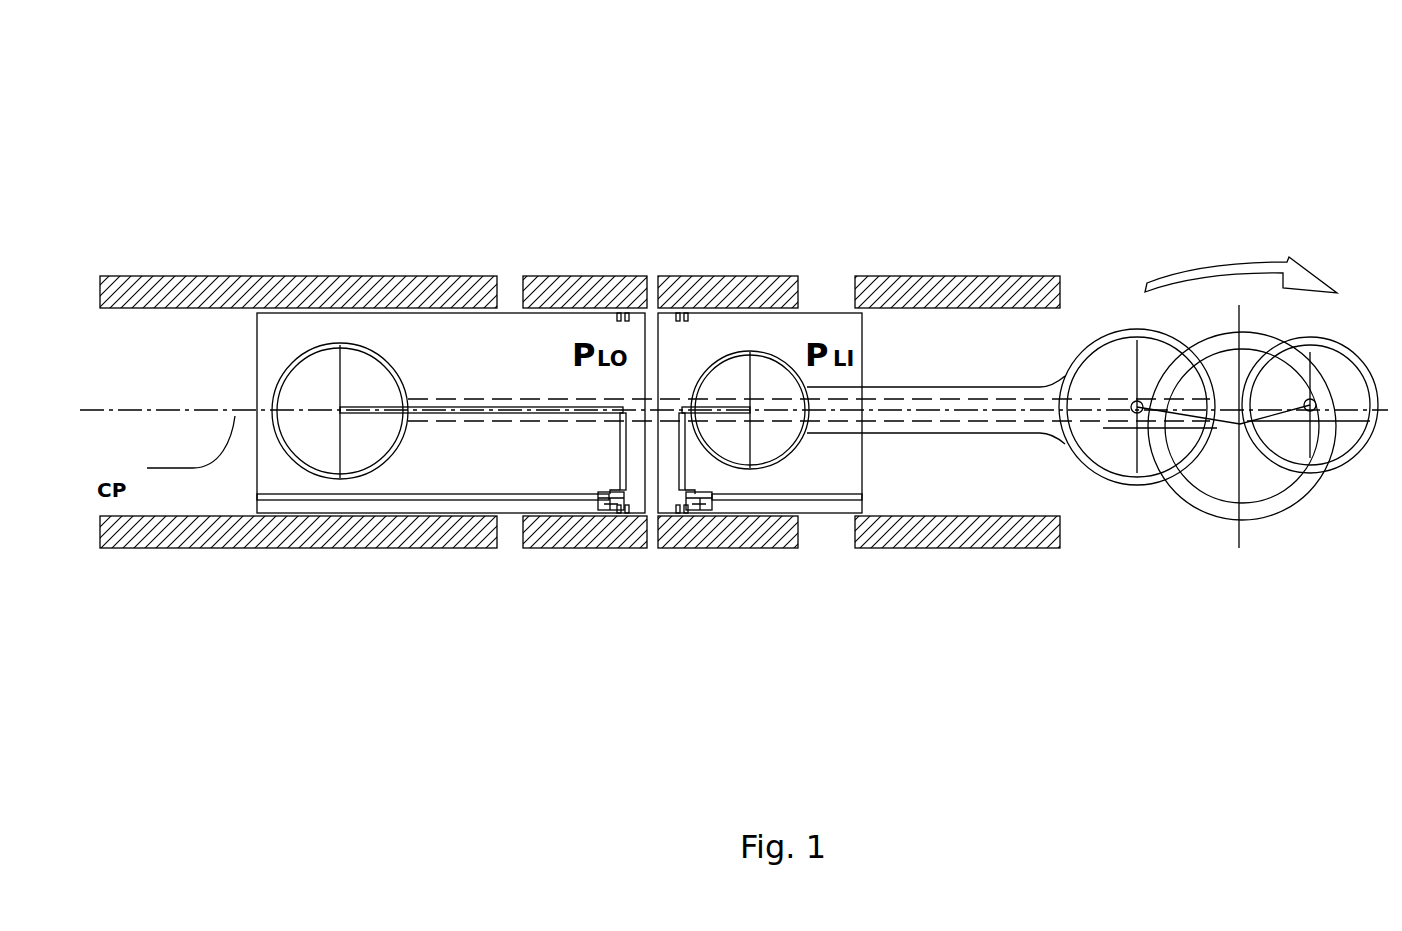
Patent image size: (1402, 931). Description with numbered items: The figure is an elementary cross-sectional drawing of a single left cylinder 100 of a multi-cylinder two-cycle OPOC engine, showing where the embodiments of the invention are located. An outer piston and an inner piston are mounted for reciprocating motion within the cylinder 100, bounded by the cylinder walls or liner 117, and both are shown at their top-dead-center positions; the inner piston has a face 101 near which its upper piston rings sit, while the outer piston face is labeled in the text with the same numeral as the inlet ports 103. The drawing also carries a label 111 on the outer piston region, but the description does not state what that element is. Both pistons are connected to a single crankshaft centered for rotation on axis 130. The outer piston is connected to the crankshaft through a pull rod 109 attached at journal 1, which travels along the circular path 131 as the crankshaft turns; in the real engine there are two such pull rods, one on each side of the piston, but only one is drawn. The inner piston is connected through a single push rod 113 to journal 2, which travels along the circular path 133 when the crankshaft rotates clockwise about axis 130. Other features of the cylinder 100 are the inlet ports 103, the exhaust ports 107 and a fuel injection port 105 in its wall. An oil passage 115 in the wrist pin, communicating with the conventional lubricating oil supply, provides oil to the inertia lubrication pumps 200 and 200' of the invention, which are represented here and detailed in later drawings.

The left cylinder 100 is at (1152, 186).
The inner piston face 101 is at (647, 548).
The inlet ports 103 is at (512, 277).
The fuel injection port 105 is at (651, 277).
The exhaust ports 107 is at (826, 277).
The pull rod 109 is at (418, 424).
The outer piston 111 is at (341, 410).
The push rod 113 is at (874, 387).
The oil passage 115 is at (752, 409).
The cylinder walls or liner 117 is at (922, 510).
The crankshaft axis 130 is at (1240, 424).
The circular path of journal 1 131 is at (1224, 520).
The circular path of journal 2 133 is at (1257, 492).
The inertia lubrication pump 200 is at (865, 601).
The inertia lubrication pump 200' is at (470, 631).
The journal 1 is at (1316, 400).
The journal 2 is at (1137, 401).